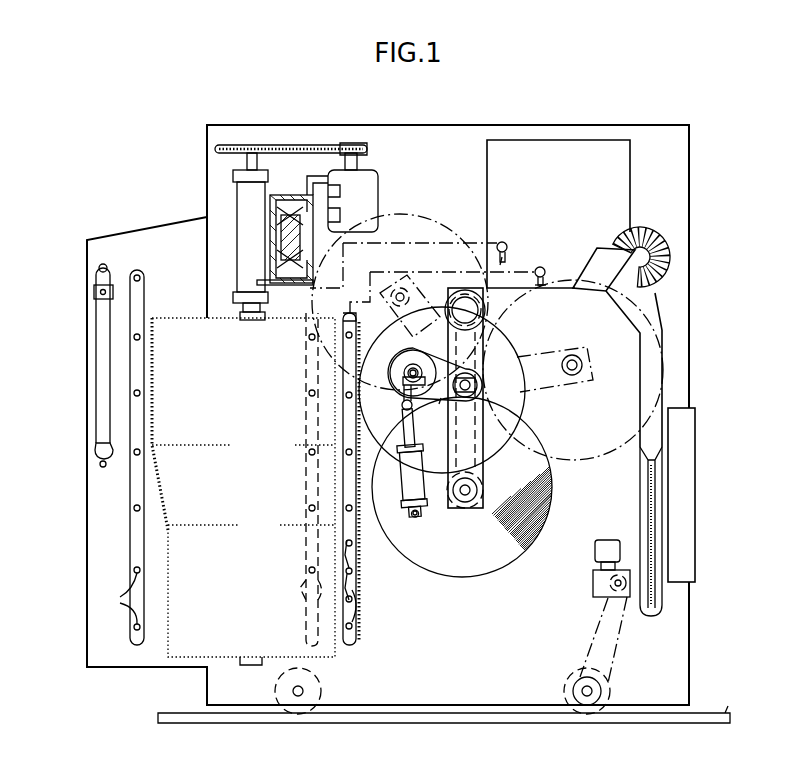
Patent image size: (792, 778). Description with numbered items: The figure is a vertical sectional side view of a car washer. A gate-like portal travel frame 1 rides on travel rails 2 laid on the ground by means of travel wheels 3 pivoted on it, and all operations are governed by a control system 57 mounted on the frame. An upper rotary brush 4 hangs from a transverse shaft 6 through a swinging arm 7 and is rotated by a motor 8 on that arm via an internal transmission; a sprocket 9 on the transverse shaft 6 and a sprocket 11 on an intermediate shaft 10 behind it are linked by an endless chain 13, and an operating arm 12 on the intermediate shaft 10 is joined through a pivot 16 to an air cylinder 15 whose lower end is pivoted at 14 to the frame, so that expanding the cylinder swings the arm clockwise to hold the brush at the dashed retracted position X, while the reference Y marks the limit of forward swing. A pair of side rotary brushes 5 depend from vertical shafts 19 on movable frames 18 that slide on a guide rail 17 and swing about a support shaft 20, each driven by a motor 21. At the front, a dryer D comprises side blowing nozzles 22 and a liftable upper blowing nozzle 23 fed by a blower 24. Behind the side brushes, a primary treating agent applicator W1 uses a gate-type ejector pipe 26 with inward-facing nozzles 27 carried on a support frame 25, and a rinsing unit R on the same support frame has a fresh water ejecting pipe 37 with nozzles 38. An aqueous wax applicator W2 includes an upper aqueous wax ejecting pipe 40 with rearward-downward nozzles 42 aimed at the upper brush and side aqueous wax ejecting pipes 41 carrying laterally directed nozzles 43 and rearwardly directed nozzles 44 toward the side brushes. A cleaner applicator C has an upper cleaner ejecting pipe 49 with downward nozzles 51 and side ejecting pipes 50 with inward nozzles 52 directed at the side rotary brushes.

The portal travel frame 1 is at (470, 125).
The travel rails 2 is at (712, 712).
The travel wheels 3 is at (298, 714).
The upper rotary brush 4 is at (507, 562).
The side rotary brush 5 is at (245, 430).
The transverse shaft 6 is at (476, 382).
The swinging arm 7 is at (475, 458).
The motor 8 is at (465, 292).
The sprocket 9 is at (441, 402).
The intermediate shaft 10 is at (411, 371).
The sprocket 11 is at (433, 358).
The operating arm 12 is at (404, 384).
The endless chain 13 is at (392, 370).
The pivot 14 is at (414, 519).
The air cylinder 15 is at (407, 486).
The pivot 16 is at (402, 409).
The guide rail 17 is at (278, 254).
The movable frame 18 is at (273, 208).
The vertical shaft 19 is at (258, 306).
The support shaft 20 is at (300, 240).
The motor 21 is at (378, 193).
The side blowing nozzle 22 is at (650, 480).
The upper blowing nozzle 23 is at (608, 296).
The blower 24 is at (628, 160).
The support frame 25 is at (87, 541).
The ejector pipe 26 is at (99, 347).
The nozzle 27 is at (94, 299).
The fresh water ejecting pipe 37 is at (130, 538).
The nozzle 38 is at (115, 598).
The upper aqueous wax ejecting pipe 40 is at (544, 268).
The side aqueous wax ejecting pipe 41 is at (356, 527).
The ejecting nozzle 42 is at (540, 282).
The nozzle 43 is at (351, 374).
The nozzle 44 is at (348, 486).
The upper cleaner ejecting pipe 49 is at (503, 242).
The side ejecting pipe 50 is at (306, 541).
The nozzle 51 is at (503, 259).
The nozzle 52 is at (303, 608).
The control system 57 is at (693, 451).
The primary treating agent applicator W1 is at (86, 391).
The aqueous wax applicator W2 is at (539, 230).
The upper retracted position X is at (428, 235).
The cleaner applicator C is at (472, 229).
The dryer D is at (700, 278).
The rinsing unit R is at (116, 565).
The forward swinging limit Y is at (575, 458).